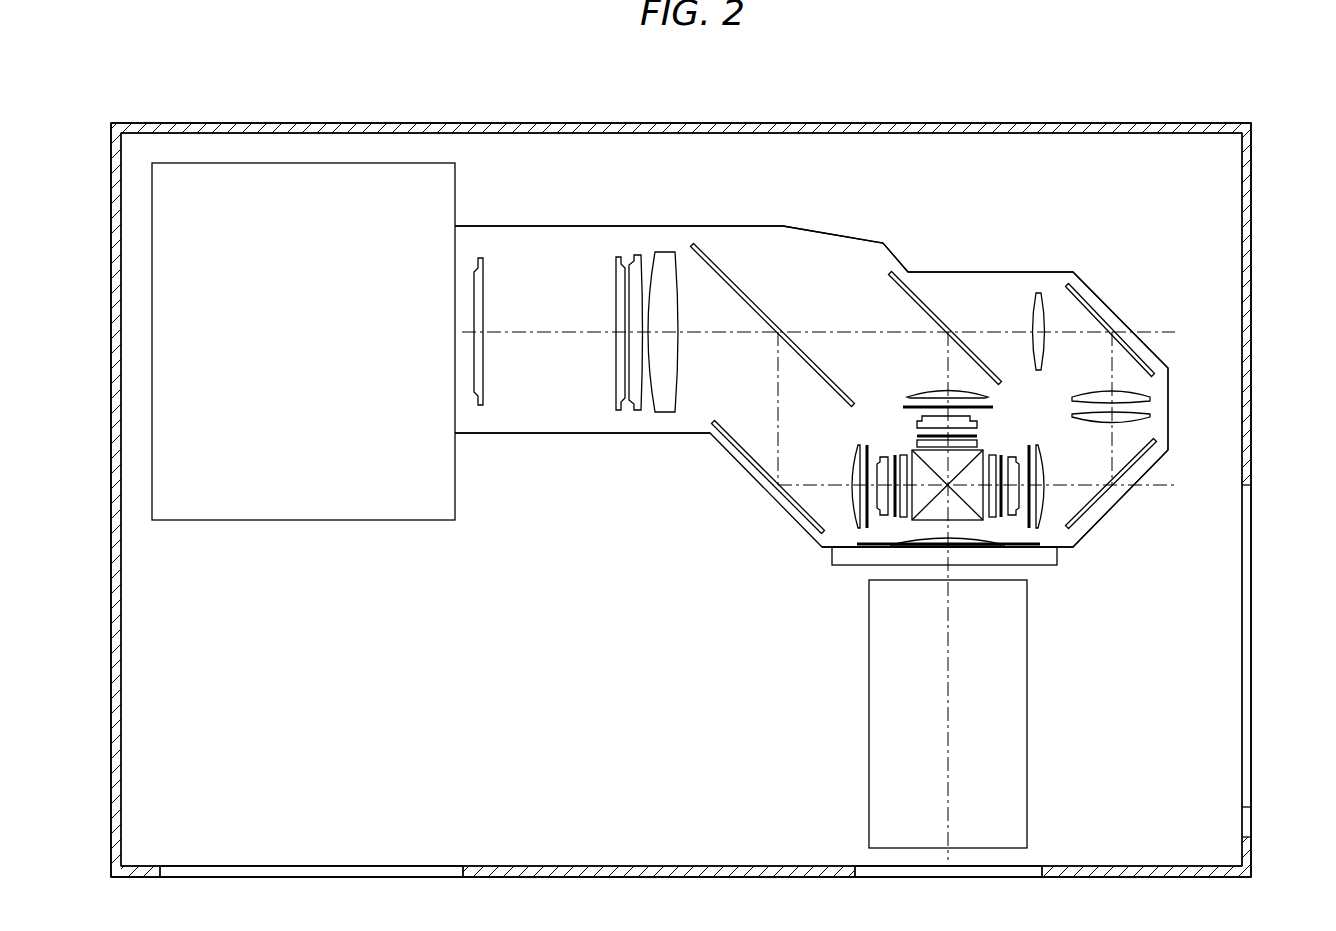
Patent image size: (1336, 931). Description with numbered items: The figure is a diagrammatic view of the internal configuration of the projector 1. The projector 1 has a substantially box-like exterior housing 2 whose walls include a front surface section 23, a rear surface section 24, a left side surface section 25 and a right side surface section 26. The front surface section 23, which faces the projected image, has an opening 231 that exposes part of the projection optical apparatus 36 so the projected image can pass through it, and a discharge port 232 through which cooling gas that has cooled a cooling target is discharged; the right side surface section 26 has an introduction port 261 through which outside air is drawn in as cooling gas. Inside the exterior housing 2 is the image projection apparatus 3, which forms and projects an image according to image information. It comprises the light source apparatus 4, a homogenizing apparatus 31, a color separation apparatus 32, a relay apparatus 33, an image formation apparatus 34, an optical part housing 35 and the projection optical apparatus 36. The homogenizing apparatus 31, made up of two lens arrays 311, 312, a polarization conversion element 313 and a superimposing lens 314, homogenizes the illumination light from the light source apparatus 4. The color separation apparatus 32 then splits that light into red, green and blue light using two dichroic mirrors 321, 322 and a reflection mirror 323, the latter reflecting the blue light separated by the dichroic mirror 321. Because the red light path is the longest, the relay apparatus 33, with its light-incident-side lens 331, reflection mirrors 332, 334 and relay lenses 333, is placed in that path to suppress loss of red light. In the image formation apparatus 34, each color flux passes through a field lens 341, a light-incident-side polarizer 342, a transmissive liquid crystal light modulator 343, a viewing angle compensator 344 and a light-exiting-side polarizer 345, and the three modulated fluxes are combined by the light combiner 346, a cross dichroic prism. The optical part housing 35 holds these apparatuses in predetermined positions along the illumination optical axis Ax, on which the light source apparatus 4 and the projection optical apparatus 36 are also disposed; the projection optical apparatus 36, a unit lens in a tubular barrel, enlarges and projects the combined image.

The projector 1 is at (1292, 88).
The exterior housing 2 is at (1252, 268).
The image projection apparatus 3 is at (1113, 222).
The light source apparatus 4 is at (366, 163).
The front surface section 23 is at (520, 877).
The opening 231 is at (858, 877).
The discharge port 232 is at (465, 877).
The rear surface section 24 is at (727, 123).
The left side surface section 25 is at (112, 430).
The right side surface section 26 is at (1252, 460).
The introduction port 261 is at (1247, 835).
The homogenizing apparatus 31 is at (641, 423).
The lens array 311 is at (485, 296).
The lens array 312 is at (618, 392).
The polarization conversion element 313 is at (636, 268).
The superimposing lens 314 is at (672, 285).
The color separation apparatus 32 is at (838, 253).
The dichroic mirror 321 is at (733, 270).
The dichroic mirror 322 is at (928, 305).
The reflection mirror 323 is at (738, 425).
The relay apparatus 33 is at (1120, 288).
The light-incident-side lens 331 is at (1038, 293).
The reflection mirror 332 is at (1118, 350).
The relay lenses 333 is at (1152, 414).
The reflection mirror 334 is at (1130, 470).
The image formation apparatus 34 is at (1040, 412).
The field lens 341 is at (940, 392).
The light-incident-side polarizer 342 is at (905, 405).
The light modulator 343 is at (917, 440).
The viewing angle compensator 344 is at (917, 421).
The light-exiting-side polarizer 345 is at (975, 434).
The light combiner 346 is at (960, 518).
The optical part housing 35 is at (950, 271).
The projection optical apparatus 36 is at (1028, 725).
The illumination optical axis Ax is at (540, 340).